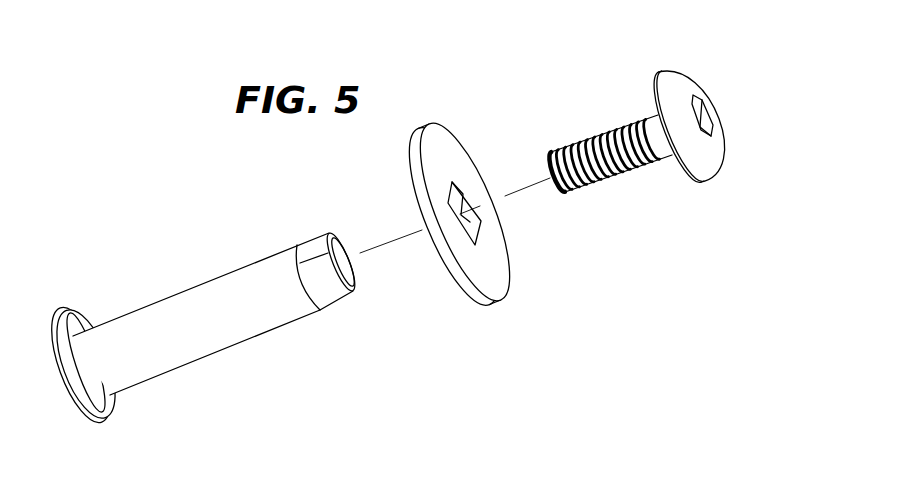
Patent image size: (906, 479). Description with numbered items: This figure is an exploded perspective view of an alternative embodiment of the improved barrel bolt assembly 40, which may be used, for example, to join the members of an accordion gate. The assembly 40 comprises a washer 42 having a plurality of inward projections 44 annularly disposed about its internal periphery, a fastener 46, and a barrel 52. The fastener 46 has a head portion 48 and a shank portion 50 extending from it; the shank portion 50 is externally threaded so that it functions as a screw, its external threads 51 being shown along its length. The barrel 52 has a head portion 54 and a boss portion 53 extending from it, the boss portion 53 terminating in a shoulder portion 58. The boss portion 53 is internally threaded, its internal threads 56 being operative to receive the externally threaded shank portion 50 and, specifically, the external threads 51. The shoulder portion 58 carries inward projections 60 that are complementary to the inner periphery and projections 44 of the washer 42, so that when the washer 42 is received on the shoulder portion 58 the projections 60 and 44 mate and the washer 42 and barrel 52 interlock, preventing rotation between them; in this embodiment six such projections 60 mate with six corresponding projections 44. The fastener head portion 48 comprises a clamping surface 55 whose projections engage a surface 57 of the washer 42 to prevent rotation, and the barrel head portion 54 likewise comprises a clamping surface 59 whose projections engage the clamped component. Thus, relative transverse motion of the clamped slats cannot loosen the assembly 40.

The barrel bolt assembly 40 is at (474, 202).
The washer 42 is at (464, 170).
The inward projection of washer 44 is at (476, 228).
The fastener 46 is at (664, 133).
The head portion of fastener 48 is at (692, 135).
The shank portion of fastener 50 is at (610, 149).
The external threads 51 is at (617, 181).
The barrel 52 is at (222, 299).
The boss portion of barrel 53 is at (248, 270).
The head portion of barrel 54 is at (55, 338).
The clamping surface of fastener head 55 is at (678, 166).
The internal threads 56 is at (350, 261).
The surface of washer 57 is at (490, 300).
The shoulder portion of barrel 58 is at (338, 240).
The clamping surface of barrel head 59 is at (75, 320).
The inward projection of barrel shoulder 60 is at (330, 278).